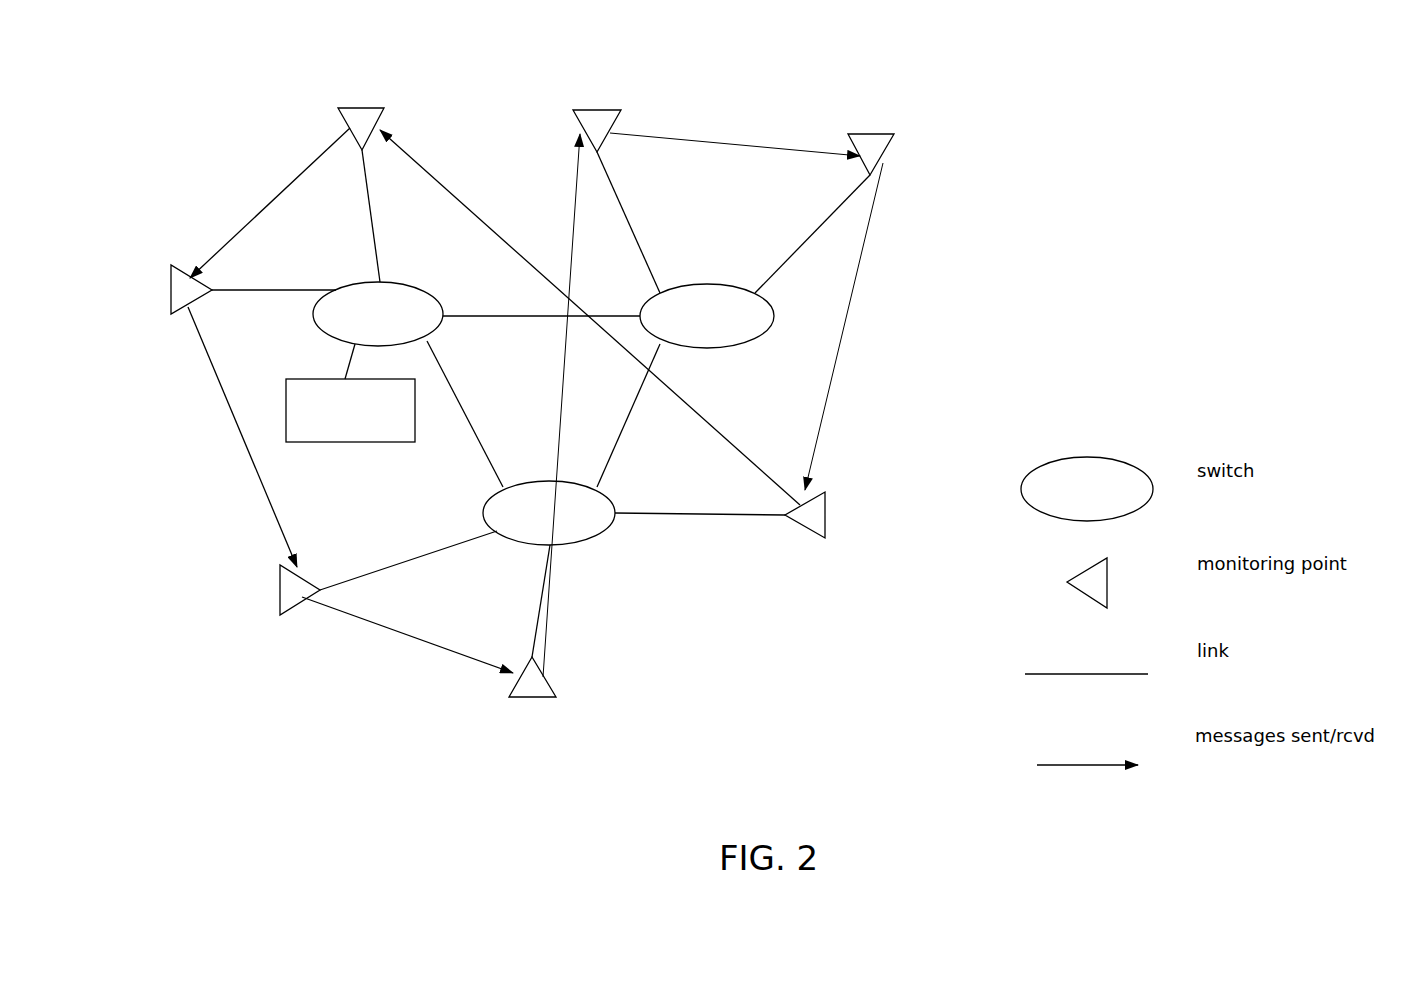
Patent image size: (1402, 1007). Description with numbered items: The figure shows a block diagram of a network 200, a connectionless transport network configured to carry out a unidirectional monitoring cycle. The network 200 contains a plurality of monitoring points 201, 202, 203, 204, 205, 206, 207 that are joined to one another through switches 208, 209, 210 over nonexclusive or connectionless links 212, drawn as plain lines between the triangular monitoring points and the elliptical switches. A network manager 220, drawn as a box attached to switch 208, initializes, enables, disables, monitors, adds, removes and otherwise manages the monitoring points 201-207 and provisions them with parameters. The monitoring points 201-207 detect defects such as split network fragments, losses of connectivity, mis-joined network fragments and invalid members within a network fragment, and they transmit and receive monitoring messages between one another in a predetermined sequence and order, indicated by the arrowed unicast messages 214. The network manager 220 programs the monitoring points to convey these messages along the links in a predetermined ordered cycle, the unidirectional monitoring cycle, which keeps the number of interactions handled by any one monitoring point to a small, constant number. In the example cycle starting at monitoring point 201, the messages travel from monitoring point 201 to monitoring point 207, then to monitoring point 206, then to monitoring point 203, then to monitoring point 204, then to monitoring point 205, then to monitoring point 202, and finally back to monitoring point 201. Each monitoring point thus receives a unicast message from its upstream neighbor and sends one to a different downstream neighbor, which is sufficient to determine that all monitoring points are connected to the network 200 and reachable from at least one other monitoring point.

The network 200 is at (1132, 82).
The monitoring point 201 is at (190, 255).
The monitoring point 202 is at (370, 96).
The monitoring point 203 is at (598, 100).
The monitoring point 204 is at (879, 128).
The monitoring point 205 is at (829, 484).
The monitoring point 206 is at (546, 667).
The monitoring point 207 is at (310, 564).
The switch 208 is at (398, 275).
The switch 209 is at (705, 275).
The switch 210 is at (560, 466).
The link 212 is at (668, 520).
The unicast message 214 is at (856, 296).
The network manager 220 is at (374, 448).